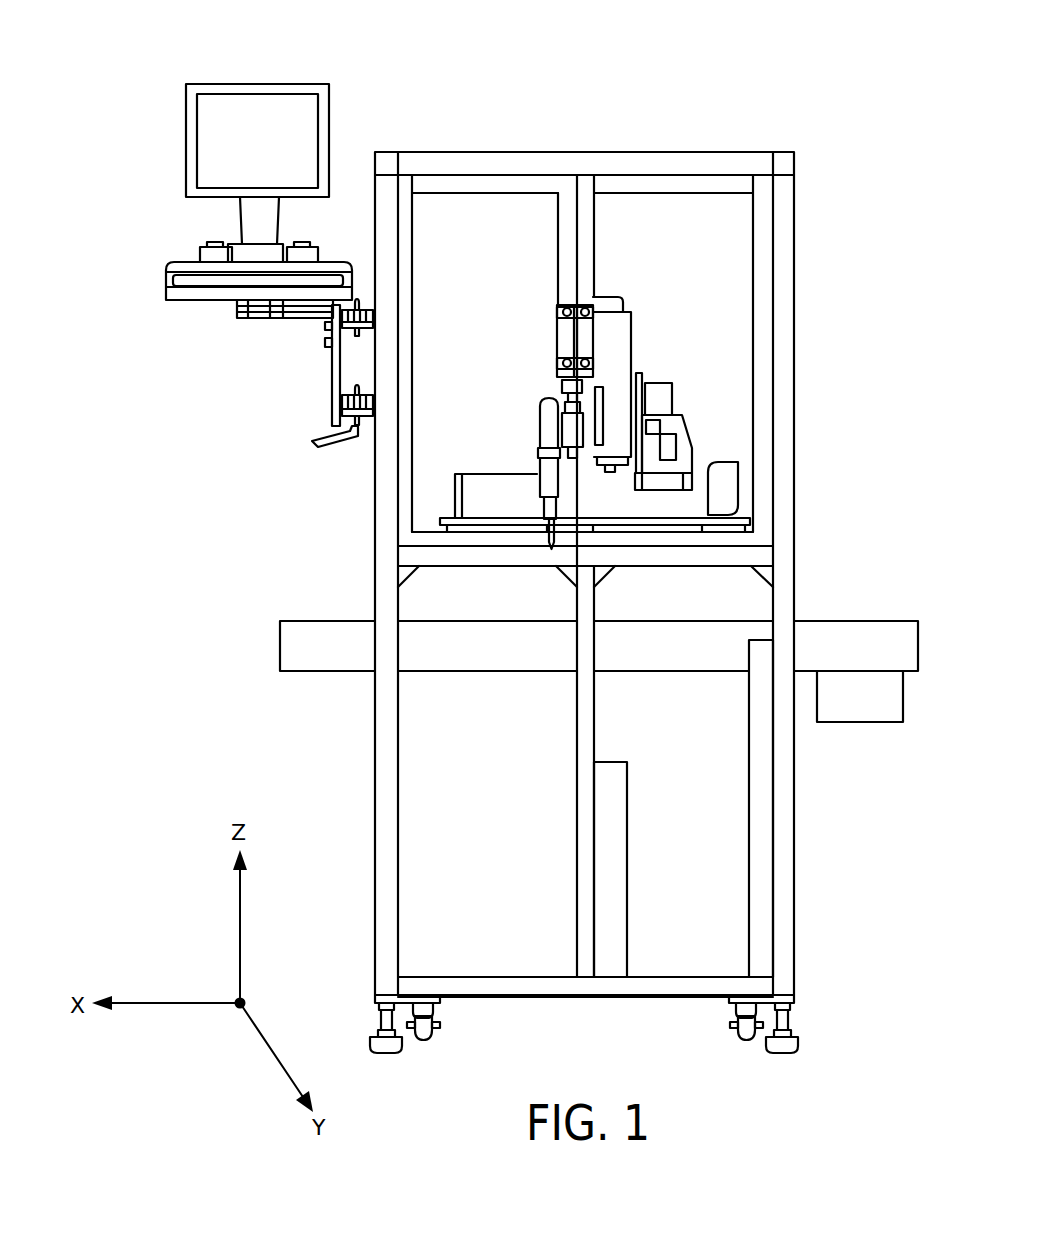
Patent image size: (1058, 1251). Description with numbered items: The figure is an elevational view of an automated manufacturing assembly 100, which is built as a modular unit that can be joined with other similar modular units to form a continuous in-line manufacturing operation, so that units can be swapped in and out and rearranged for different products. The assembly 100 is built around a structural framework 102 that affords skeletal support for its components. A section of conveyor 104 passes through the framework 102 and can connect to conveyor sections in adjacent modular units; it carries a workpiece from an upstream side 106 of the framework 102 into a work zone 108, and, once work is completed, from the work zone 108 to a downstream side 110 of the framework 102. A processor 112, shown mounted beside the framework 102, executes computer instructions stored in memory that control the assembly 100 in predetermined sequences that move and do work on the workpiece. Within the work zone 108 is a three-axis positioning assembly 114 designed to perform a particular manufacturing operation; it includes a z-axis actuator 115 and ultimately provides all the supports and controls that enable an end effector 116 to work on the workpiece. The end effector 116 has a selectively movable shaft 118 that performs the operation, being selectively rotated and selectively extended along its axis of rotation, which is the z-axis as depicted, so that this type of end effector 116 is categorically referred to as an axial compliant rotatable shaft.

The automated manufacturing assembly 100 is at (412, 52).
The structural framework 102 is at (800, 248).
The conveyor 104 is at (310, 672).
The upstream side 106 is at (300, 600).
The work zone 108 is at (628, 593).
The downstream side 110 is at (838, 575).
The processor 112 is at (190, 224).
The three-axis positioning assembly 114 is at (538, 364).
The z-axis actuator 115 is at (557, 323).
The end effector 116 is at (528, 402).
The movable shaft 118 is at (547, 545).